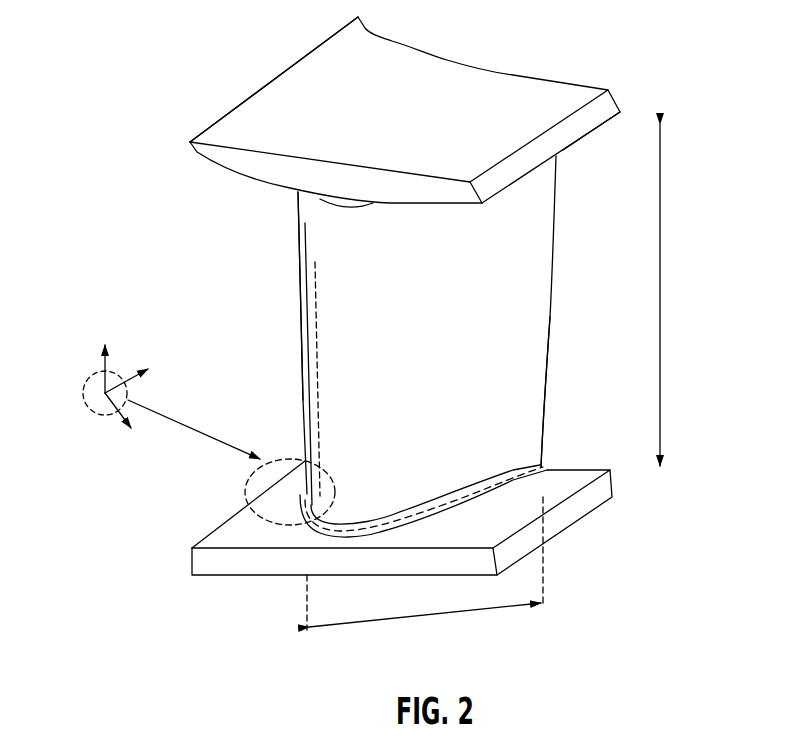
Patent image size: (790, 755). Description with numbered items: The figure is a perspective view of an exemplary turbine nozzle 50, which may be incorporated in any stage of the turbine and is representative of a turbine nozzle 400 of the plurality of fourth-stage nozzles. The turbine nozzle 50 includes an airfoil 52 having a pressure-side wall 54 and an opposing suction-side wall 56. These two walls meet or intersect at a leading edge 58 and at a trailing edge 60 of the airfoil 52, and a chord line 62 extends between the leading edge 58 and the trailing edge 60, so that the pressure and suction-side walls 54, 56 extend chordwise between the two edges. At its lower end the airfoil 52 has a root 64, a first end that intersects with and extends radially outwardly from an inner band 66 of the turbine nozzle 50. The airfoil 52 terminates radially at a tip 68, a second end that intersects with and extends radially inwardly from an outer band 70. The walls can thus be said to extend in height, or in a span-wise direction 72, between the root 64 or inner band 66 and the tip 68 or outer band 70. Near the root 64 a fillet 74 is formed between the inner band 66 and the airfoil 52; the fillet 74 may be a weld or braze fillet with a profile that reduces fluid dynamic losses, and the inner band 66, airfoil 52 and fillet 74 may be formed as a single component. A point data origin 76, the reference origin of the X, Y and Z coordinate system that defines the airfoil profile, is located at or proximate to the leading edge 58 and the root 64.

The turbine nozzle 400 is at (168, 98).
The turbine nozzle 50 is at (205, 82).
The airfoil 52 is at (447, 272).
The pressure-side wall 54 is at (288, 263).
The suction-side wall 56 is at (365, 380).
The leading edge 58 is at (300, 345).
The trailing edge 60 is at (549, 315).
The chord line 62 is at (412, 617).
The root 64 is at (380, 516).
The inner band 66 is at (592, 477).
The tip 68 is at (566, 157).
The outer band 70 is at (563, 98).
The span-wise direction 72 is at (662, 295).
The fillet 74 is at (447, 508).
The point data origin 76 is at (88, 403).